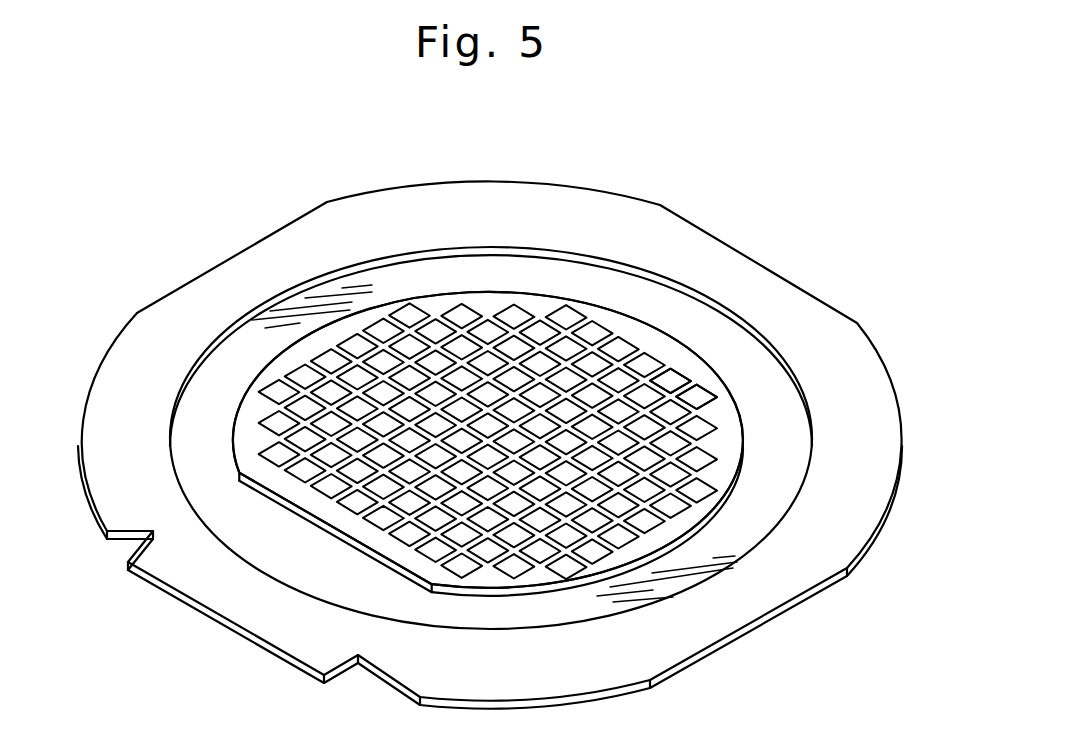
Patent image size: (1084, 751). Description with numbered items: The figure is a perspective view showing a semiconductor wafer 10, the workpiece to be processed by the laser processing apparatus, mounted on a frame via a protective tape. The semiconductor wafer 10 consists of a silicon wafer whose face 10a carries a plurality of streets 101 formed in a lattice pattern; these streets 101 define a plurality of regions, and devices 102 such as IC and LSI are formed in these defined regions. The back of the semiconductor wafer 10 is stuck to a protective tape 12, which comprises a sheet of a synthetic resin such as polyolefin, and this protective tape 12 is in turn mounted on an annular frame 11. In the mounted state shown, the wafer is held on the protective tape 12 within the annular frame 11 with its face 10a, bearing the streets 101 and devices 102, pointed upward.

The semiconductor wafer 10 is at (272, 358).
The face 10a is at (648, 340).
The streets 101 is at (493, 322).
The devices 102 is at (677, 378).
The annular frame 11 is at (853, 374).
The protective tape 12 is at (217, 382).